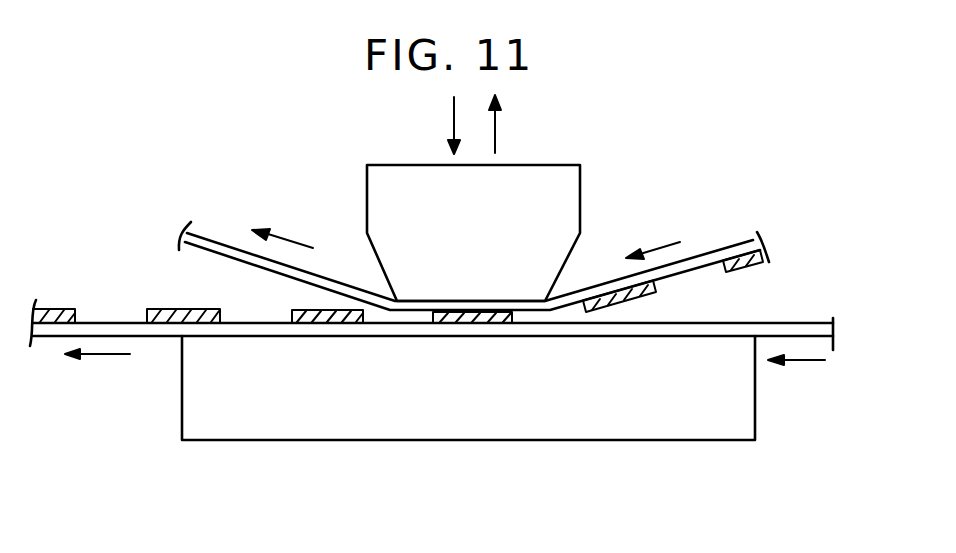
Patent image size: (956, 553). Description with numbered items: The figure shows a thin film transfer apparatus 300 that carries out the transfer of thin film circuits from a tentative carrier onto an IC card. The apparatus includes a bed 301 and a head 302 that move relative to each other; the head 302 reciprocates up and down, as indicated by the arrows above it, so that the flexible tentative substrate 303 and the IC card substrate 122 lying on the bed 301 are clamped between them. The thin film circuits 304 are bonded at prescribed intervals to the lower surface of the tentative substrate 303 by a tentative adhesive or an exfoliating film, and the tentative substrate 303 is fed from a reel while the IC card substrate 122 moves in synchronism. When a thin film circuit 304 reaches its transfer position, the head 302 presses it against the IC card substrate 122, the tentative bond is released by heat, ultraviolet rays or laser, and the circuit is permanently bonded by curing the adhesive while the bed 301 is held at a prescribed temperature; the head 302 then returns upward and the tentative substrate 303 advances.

The thin film transfer apparatus 300 is at (453, 316).
The bed 301 is at (755, 413).
The head 302 is at (580, 183).
The tentative substrate 303 is at (712, 252).
The thin film circuits 304 is at (163, 308).
The IC card substrate 122 is at (797, 323).